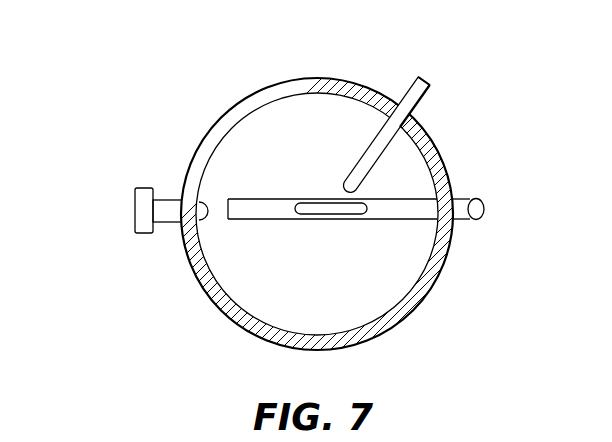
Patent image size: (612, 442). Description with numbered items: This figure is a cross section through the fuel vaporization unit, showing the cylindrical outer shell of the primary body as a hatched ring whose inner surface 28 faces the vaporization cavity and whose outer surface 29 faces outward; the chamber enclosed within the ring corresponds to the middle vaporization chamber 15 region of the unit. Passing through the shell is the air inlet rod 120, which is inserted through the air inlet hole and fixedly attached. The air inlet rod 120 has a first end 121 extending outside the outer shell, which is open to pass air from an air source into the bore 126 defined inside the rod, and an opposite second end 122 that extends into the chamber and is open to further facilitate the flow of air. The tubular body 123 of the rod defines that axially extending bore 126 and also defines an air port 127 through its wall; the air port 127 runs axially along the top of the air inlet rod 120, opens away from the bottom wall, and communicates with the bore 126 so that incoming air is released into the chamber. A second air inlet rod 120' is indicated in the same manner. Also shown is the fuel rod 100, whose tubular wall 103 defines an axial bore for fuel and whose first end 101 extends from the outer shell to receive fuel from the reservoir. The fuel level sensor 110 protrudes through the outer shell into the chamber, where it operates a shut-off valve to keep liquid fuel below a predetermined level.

The middle vaporization chamber 15 is at (326, 199).
The inner surface 28 is at (368, 325).
The outer surface 29 is at (422, 305).
The fuel rod 100 is at (427, 115).
The first end 101 is at (417, 76).
The tubular wall 103 is at (420, 105).
The fuel level sensor 110 is at (143, 213).
The air inlet rod 120 is at (499, 189).
The second tubular member 120' is at (576, 411).
The first end 121 is at (463, 221).
The second end 122 is at (257, 197).
The tubular body 123 is at (332, 198).
The bore 126 is at (215, 225).
The air port 127 is at (328, 208).